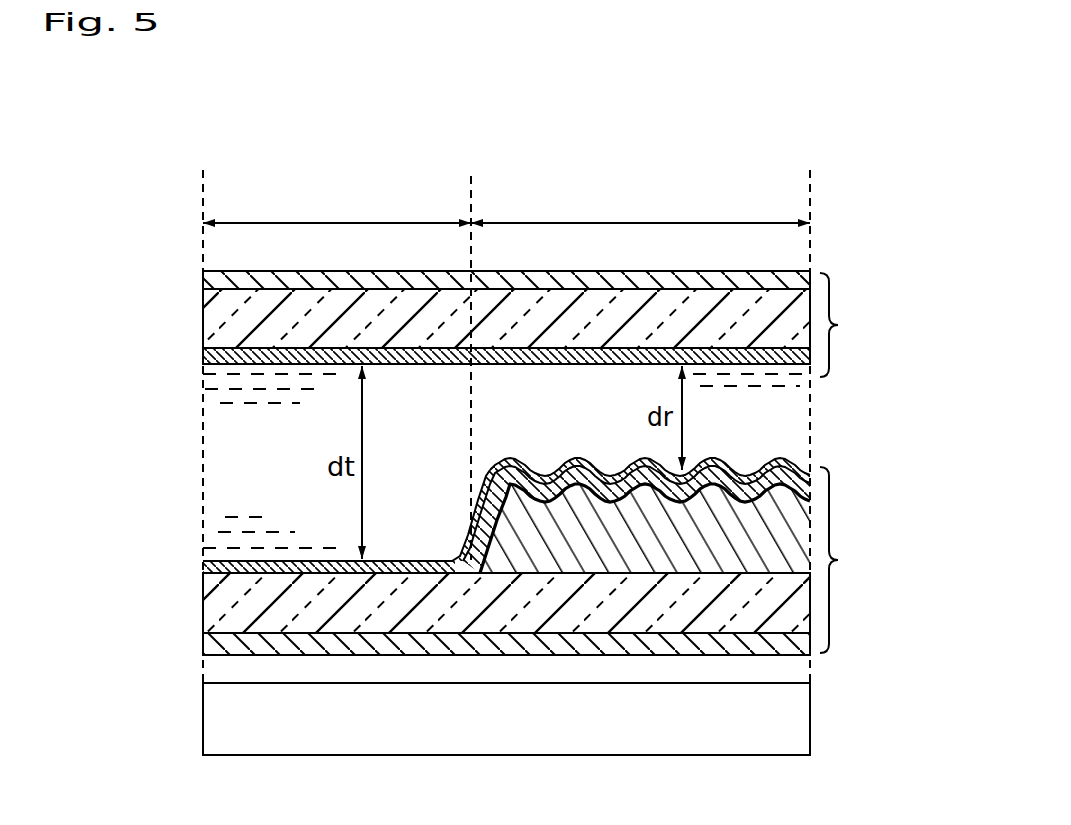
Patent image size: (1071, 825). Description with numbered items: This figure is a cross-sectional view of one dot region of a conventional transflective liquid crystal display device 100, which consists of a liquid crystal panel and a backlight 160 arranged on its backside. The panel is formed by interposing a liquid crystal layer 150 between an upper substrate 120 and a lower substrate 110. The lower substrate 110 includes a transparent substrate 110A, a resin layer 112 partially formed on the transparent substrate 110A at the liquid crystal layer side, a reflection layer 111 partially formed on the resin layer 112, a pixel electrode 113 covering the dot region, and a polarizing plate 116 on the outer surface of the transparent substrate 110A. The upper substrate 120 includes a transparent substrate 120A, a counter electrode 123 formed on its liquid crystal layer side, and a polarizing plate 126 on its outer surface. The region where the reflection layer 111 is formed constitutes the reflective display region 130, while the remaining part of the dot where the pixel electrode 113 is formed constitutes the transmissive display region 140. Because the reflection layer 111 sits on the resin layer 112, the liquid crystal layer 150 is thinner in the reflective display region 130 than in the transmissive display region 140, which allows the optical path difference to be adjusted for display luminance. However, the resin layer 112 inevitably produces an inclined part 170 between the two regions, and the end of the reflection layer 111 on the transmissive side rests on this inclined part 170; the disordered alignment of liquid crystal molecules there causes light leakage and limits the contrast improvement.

The liquid crystal display device 100 is at (750, 172).
The lower substrate 110 is at (478, 520).
The transparent substrate 110A is at (207, 607).
The reflection layer 111 is at (622, 480).
The resin layer 112 is at (805, 462).
The pixel electrode 113 is at (203, 565).
The polarizing plate 116 is at (203, 646).
The upper substrate 120 is at (474, 319).
The transparent substrate 120A is at (203, 319).
The counter electrode 123 is at (203, 357).
The polarizing plate 126 is at (203, 280).
The reflective display region 130 is at (640, 207).
The transmissive display region 140 is at (337, 206).
The liquid crystal layer / cell gap 150 is at (213, 452).
The backlight 160 is at (210, 719).
The inclined part 170 is at (452, 538).